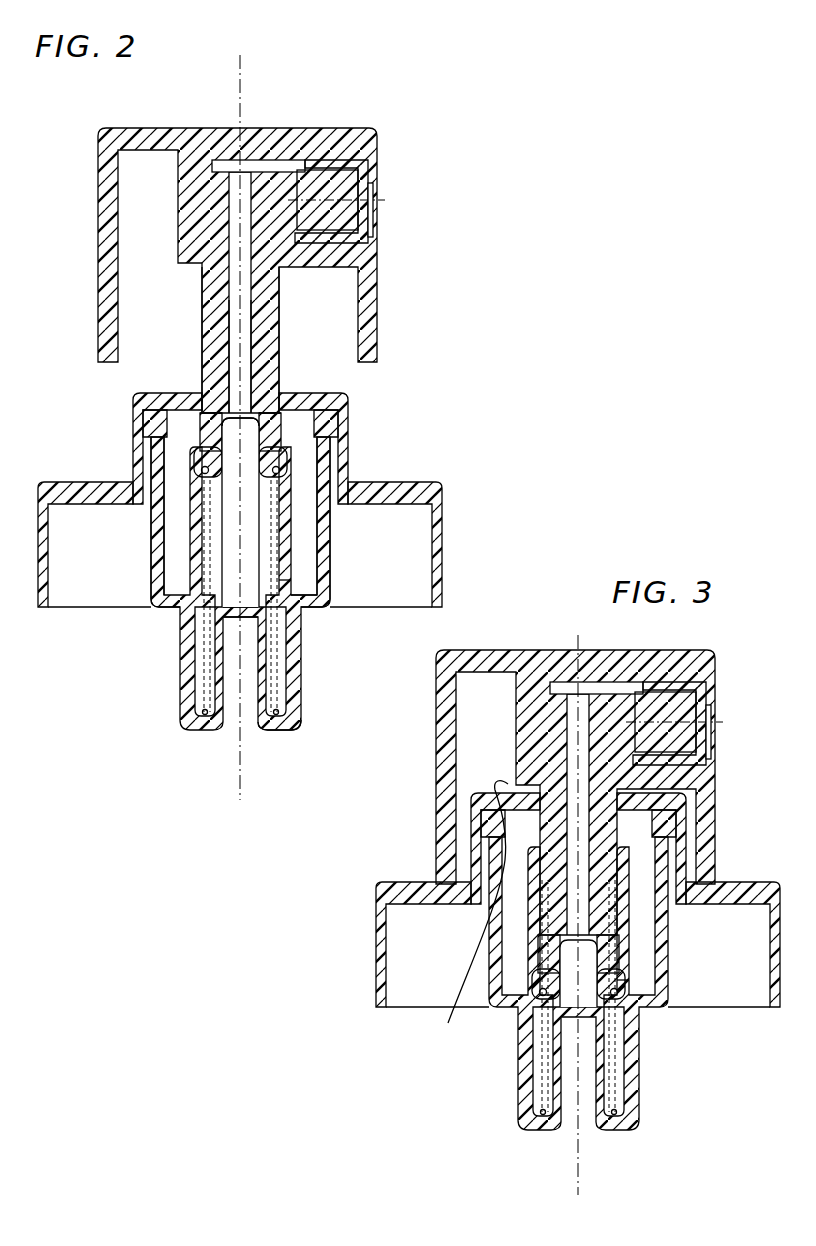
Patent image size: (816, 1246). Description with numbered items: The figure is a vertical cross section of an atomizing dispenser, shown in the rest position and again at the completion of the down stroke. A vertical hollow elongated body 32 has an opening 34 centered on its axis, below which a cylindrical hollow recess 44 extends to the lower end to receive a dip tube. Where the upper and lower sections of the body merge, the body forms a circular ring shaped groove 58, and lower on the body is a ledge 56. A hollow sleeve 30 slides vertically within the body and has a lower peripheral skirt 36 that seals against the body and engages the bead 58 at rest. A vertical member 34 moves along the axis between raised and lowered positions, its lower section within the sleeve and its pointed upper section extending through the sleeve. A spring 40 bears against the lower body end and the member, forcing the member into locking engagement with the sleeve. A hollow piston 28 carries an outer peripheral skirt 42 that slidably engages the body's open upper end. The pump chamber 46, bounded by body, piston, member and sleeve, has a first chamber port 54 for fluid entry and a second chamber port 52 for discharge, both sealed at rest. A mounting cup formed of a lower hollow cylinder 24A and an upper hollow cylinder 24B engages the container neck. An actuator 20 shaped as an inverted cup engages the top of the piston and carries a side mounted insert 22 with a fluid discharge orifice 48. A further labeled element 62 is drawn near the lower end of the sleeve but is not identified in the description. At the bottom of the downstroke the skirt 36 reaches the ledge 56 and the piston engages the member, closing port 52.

In FIG. 2, the actuator 20 is at (288, 128).
In FIG. 2, the side mounted insert 22 is at (372, 218).
In FIG. 2, the fluid discharge orifice 48 is at (376, 200).
In FIG. 2, the hollow piston 28 is at (282, 305).
In FIG. 2, the opening 34 is at (231, 362).
In FIG. 2, the second chamber port 52 is at (283, 388).
In FIG. 2, the outer peripheral skirt 42 is at (148, 442).
In FIG. 2, the upper hollow cylinder 24B is at (136, 470).
In FIG. 2, the lower hollow cylinder 24A is at (445, 545).
In FIG. 2, the first chamber port 54 is at (255, 468).
In FIG. 2, the pump chamber 46 is at (178, 527).
In FIG. 2, the vertical hollow elongated body 32 is at (264, 536).
In FIG. 2, the hollow sleeve 30 is at (183, 560).
In FIG. 2, the seal 62 is at (292, 580).
In FIG. 3, the seal 62 is at (570, 983).
In FIG. 2, the circular ring shaped groove 58 is at (303, 590).
In FIG. 2, the lower peripheral skirt 36 is at (303, 606).
In FIG. 2, the spring 40 is at (282, 664).
In FIG. 2, the ledge 56 is at (290, 724).
In FIG. 2, the cylindrical hollow recess 44 is at (252, 697).